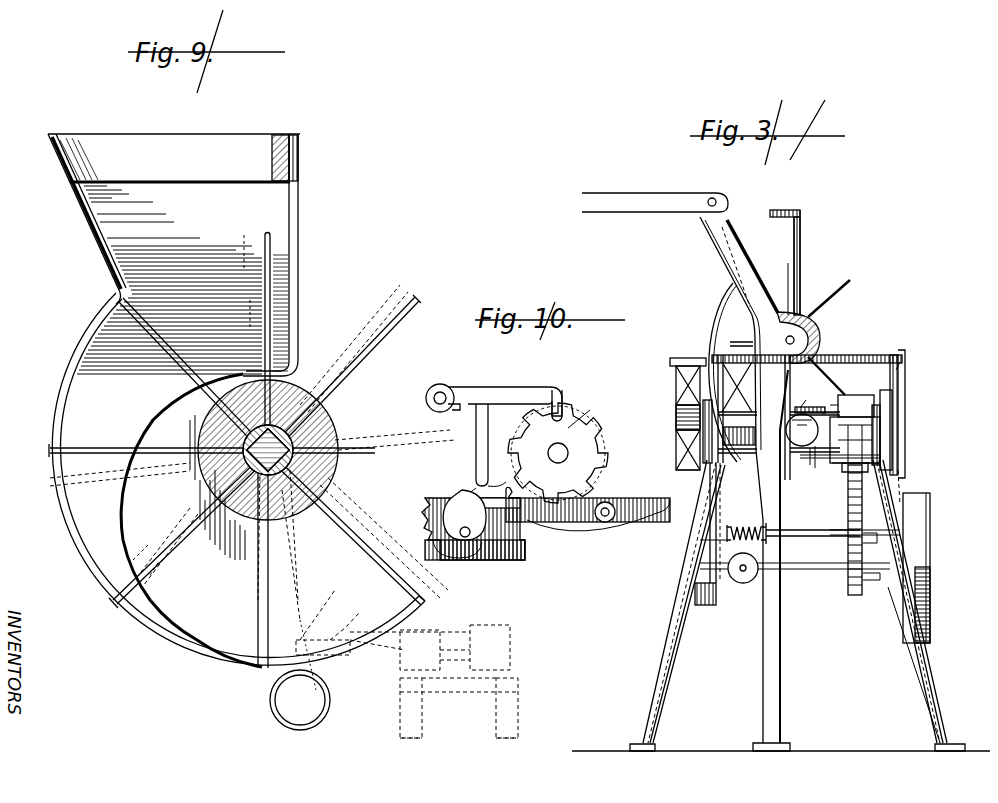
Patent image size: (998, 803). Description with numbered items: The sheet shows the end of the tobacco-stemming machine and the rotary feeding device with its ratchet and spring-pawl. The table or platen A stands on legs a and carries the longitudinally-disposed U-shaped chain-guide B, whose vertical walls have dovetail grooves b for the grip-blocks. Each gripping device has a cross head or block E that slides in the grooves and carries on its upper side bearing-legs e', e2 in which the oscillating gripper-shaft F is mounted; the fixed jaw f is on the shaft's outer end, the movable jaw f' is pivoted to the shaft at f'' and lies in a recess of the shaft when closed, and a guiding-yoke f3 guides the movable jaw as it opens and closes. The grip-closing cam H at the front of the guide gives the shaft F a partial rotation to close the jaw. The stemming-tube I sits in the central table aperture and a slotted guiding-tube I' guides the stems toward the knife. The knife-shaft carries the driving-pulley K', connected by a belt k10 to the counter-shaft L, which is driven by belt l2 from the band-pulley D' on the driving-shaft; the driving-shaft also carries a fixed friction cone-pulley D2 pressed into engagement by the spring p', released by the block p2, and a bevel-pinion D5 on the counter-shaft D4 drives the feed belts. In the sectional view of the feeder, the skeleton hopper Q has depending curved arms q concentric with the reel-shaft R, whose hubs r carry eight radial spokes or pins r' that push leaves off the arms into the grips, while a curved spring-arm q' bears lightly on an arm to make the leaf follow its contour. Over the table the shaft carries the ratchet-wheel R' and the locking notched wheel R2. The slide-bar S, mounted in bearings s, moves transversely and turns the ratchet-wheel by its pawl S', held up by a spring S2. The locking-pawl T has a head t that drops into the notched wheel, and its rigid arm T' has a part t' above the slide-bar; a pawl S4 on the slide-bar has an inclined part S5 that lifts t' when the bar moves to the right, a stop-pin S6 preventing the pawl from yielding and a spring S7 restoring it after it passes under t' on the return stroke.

In FIG. 9, the skeleton hopper Q is at (193, 134).
In FIG. 3, the skeleton hopper Q is at (800, 226).
In FIG. 9, the depending curved arm q is at (221, 479).
In FIG. 3, the depending curved arm q is at (716, 365).
In FIG. 9, the curved spring-arm q' is at (149, 520).
In FIG. 3, the curved spring-arm q' is at (815, 275).
In FIG. 9, the hub r is at (252, 446).
In FIG. 9, the radial spokes or pins r' is at (299, 462).
In FIG. 3, the radial spokes or pins r' is at (839, 322).
In FIG. 9, the reel-shaft R is at (248, 470).
In FIG. 3, the reel-shaft R is at (817, 330).
In FIG. 9, the stemming-tube I is at (76, 546).
In FIG. 9, the slotted guiding-tube I' is at (276, 688).
In FIG. 9, the fixed jaw f is at (300, 700).
In FIG. 9, the movable jaw f' is at (317, 609).
In FIG. 9, the guiding-yoke f3 is at (349, 613).
In FIG. 9, the pivot of movable jaw f'' is at (350, 656).
In FIG. 9, the bearing-leg e' is at (410, 630).
In FIG. 3, the bearing-leg e' is at (821, 407).
In FIG. 9, the bearing-leg e2 is at (512, 640).
In FIG. 3, the bearing-leg e2 is at (872, 398).
In FIG. 9, the dovetail groove b is at (400, 688).
In FIG. 9, the chain-guide B is at (520, 712).
In FIG. 9, the cross head or block E is at (458, 700).
In FIG. 10, the locking-pawl T is at (494, 377).
In FIG. 10, the arm T' is at (487, 412).
In FIG. 10, the head t is at (551, 389).
In FIG. 10, the part of arm t' is at (476, 464).
In FIG. 10, the ratchet-wheel R' is at (567, 450).
In FIG. 10, the locking notched wheel R2 is at (572, 420).
In FIG. 10, the slide-bar S is at (464, 509).
In FIG. 3, the slide-bar S is at (803, 400).
In FIG. 10, the slide bar S' is at (588, 522).
In FIG. 10, the spring S2 is at (612, 526).
In FIG. 10, the cam S4 is at (464, 515).
In FIG. 10, the cam pin S5 is at (468, 492).
In FIG. 10, the cam spring S6 is at (440, 546).
In FIG. 10, the cam block S7 is at (512, 560).
In FIG. 3, the bearing s is at (900, 380).
In FIG. 3, the belt k10 is at (682, 372).
In FIG. 3, the driving-pulley K' is at (680, 418).
In FIG. 3, the counter-shaft L is at (678, 455).
In FIG. 3, the oscillating gripper-shaft F is at (893, 413).
In FIG. 3, the grip-closing cam H is at (882, 432).
In FIG. 3, the chain C is at (852, 592).
In FIG. 3, the fixed friction cone-pulley D2 is at (930, 502).
In FIG. 3, the table or platen A is at (753, 460).
In FIG. 3, the spring p' is at (813, 516).
In FIG. 3, the bevel-pinion D5 is at (762, 560).
In FIG. 3, the counter-shaft D4 is at (748, 572).
In FIG. 3, the band-pulley D' is at (722, 540).
In FIG. 3, the belt l2 is at (710, 480).
In FIG. 3, the block p2 is at (700, 548).
In FIG. 3, the legs a is at (680, 648).